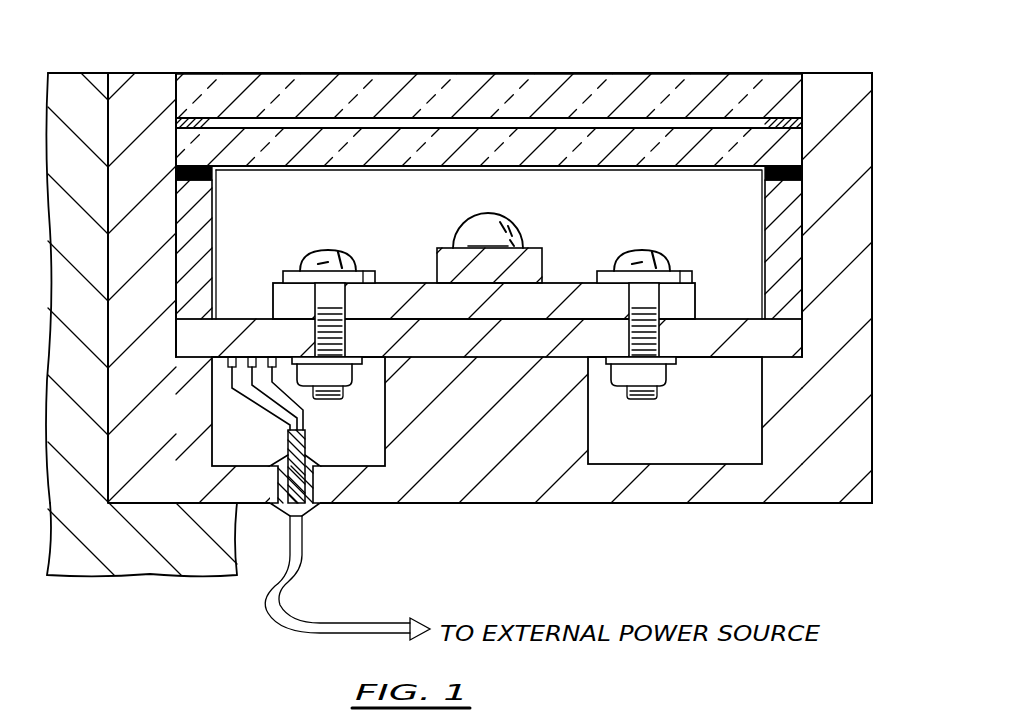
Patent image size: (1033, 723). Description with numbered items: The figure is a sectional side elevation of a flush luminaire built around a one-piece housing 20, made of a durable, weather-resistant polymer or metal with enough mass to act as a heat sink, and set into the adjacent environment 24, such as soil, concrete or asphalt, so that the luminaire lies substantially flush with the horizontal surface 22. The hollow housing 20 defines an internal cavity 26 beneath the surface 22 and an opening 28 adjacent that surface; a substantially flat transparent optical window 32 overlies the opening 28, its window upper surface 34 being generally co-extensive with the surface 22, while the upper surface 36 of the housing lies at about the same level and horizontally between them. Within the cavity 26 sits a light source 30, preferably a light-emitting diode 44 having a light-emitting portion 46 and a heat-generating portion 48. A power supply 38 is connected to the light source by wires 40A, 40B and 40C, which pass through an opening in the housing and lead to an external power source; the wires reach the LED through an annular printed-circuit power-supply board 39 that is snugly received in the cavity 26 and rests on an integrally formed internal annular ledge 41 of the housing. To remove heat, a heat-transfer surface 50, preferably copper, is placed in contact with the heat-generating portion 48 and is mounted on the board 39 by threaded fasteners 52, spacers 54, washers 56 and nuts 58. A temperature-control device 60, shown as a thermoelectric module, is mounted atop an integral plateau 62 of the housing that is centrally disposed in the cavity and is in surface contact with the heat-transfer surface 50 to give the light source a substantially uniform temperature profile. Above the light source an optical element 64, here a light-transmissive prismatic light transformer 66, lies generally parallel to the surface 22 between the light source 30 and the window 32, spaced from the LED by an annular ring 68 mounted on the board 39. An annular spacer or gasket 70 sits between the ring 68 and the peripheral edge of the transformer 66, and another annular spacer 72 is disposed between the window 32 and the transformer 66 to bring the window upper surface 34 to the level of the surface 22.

The housing 20 is at (838, 70).
The surface 22 is at (70, 72).
The adjacent environment 24 is at (98, 557).
The internal cavity 26 is at (695, 207).
The opening 28 is at (178, 72).
The light source 30 is at (490, 229).
The optical window 32 is at (593, 80).
The window upper surface 34 is at (246, 71).
The upper surface of the housing 36 is at (121, 71).
The power supply 38 is at (320, 515).
The printed-circuit power-supply board 39 is at (238, 318).
The wire 40A is at (258, 405).
The wire 40B is at (307, 422).
The wire 40C is at (307, 412).
The internal annular ledge 41 is at (793, 345).
The light-emitting diode 44 is at (456, 246).
The light-emitting portion 46 is at (480, 216).
The heat-generating portion 48 is at (437, 250).
The heat-transfer surface 50 is at (568, 282).
The threaded fasteners 52 is at (313, 254).
The spacers 54 is at (290, 270).
The washers 56 is at (370, 362).
The nuts 58 is at (356, 378).
The temperature-control device 60 is at (550, 368).
The integral plateau 62 is at (500, 440).
The optical element 64 is at (735, 172).
The prismatic light transformer 66 is at (672, 128).
The annular ring 68 is at (795, 257).
The annular spacer or gasket 70 is at (795, 173).
The annular spacer 72 is at (758, 121).